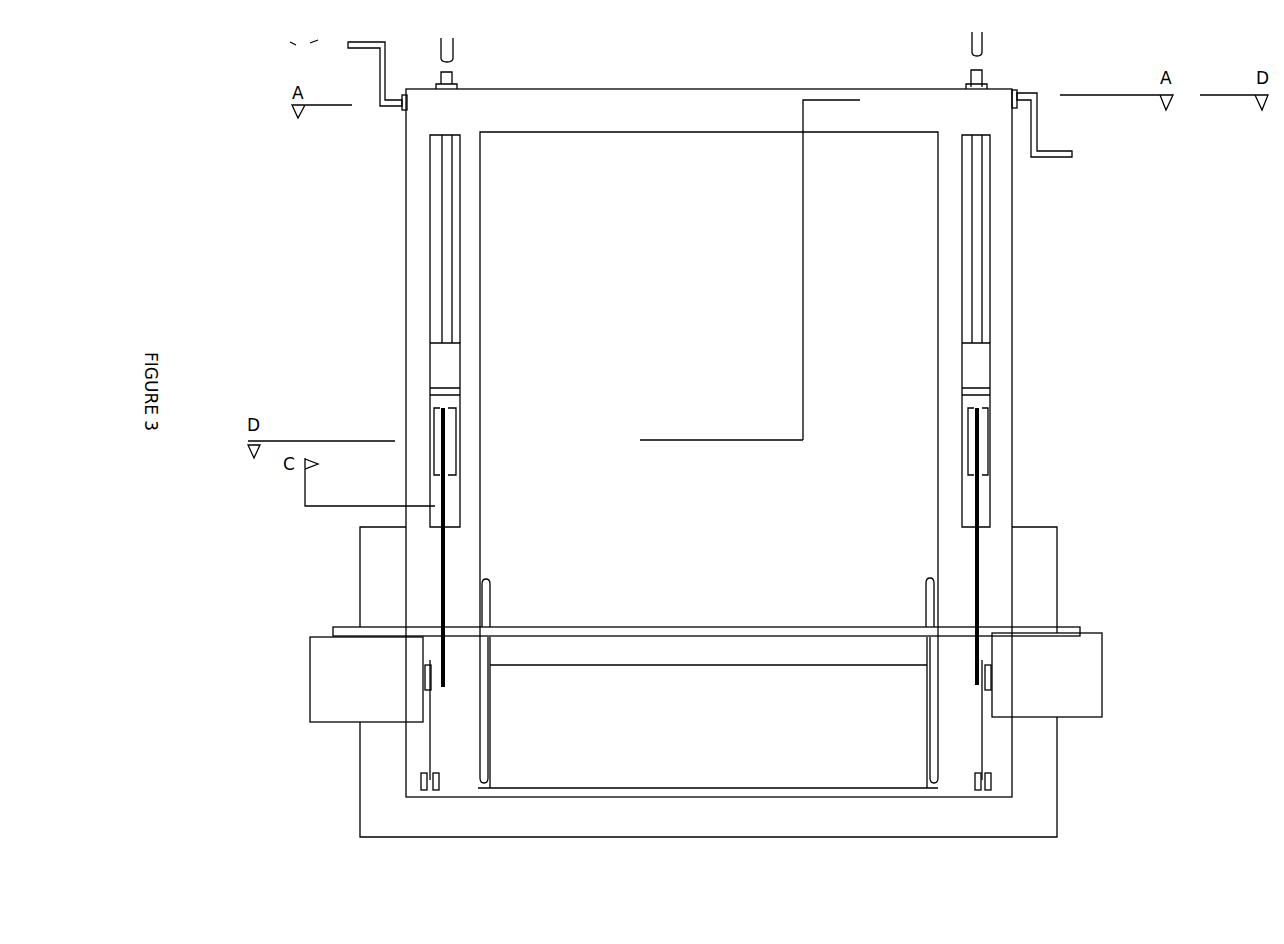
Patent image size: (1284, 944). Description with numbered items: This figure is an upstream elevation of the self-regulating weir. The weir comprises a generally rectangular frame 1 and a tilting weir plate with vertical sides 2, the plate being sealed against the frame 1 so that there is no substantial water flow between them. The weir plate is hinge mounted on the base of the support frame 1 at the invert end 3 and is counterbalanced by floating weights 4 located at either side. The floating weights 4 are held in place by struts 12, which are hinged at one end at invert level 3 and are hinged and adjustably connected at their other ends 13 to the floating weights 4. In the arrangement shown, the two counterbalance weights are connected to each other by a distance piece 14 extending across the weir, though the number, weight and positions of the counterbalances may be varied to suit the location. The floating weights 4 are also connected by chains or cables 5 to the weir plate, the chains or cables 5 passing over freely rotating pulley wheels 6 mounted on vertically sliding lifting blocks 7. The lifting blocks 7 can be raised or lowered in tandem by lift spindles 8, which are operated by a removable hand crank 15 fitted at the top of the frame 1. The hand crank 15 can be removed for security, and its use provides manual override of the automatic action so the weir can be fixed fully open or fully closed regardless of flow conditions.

The frame 1 is at (727, 105).
The vertical sides 2 is at (708, 712).
The invert end 3 is at (481, 790).
The floating weights 4 is at (355, 678).
The chains or cables 5 is at (438, 500).
The pulley wheels 6 is at (440, 440).
The lifting blocks 7 is at (442, 370).
The lift spindles 8 is at (448, 222).
The struts 12 is at (425, 733).
The other ends 13 is at (430, 683).
The distance piece 14 is at (718, 630).
The hand crank 15 is at (380, 82).